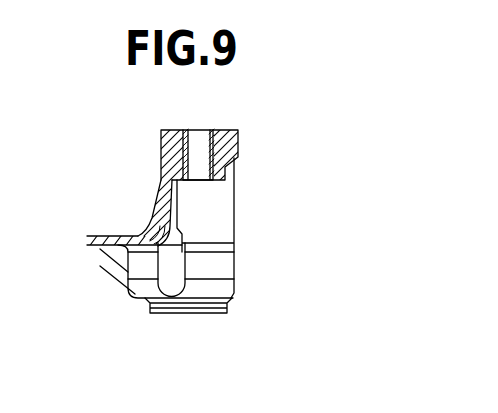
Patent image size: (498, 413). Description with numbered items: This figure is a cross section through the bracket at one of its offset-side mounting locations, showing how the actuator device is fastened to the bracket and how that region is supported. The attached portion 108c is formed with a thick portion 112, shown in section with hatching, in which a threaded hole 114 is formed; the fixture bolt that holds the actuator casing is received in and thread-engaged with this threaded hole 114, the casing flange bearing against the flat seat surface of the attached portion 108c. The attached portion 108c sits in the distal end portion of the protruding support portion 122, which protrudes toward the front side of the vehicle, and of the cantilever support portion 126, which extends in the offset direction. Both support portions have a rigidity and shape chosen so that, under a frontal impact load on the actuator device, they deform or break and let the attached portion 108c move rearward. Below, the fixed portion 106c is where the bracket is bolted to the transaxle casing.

The fixed portion 106c is at (180, 313).
The attached portion 108c is at (228, 129).
The thick portion 112 is at (172, 160).
The threaded hole 114 is at (190, 149).
The protruding support portion 122 is at (162, 212).
The cantilever support portion 126 is at (217, 212).